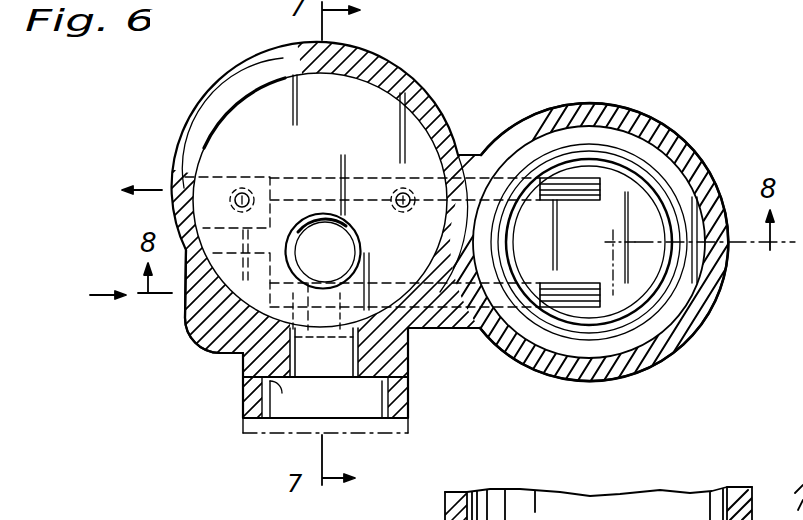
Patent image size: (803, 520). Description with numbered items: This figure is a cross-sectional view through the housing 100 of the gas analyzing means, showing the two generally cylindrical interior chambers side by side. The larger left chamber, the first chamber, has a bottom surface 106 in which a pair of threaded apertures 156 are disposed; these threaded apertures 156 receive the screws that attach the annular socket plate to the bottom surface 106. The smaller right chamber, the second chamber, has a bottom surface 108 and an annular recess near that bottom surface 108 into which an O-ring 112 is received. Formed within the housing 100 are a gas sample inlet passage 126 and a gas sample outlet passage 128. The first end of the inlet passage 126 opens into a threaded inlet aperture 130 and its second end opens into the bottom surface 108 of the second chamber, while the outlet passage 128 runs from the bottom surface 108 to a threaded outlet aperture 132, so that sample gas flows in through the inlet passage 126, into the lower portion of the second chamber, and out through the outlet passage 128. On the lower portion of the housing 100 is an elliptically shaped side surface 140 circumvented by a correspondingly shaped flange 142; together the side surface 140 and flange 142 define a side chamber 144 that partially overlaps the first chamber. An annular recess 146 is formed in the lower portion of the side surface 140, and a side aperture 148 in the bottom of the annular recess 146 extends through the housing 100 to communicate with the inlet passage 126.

The housing 100 is at (403, 63).
The bottom surface 106 is at (300, 74).
The bottom surface 108 is at (665, 284).
The O-ring 112 is at (668, 190).
The gas sample inlet passage 126 is at (400, 278).
The gas sample outlet passage 128 is at (312, 177).
The threaded inlet aperture 130 is at (188, 322).
The threaded outlet aperture 132 is at (213, 170).
The side surface 140 is at (266, 393).
The flange 142 is at (410, 387).
The side chamber 144 is at (307, 407).
The annular recess 146 is at (318, 372).
The side aperture 148 is at (409, 345).
The threaded apertures 156 is at (247, 193).